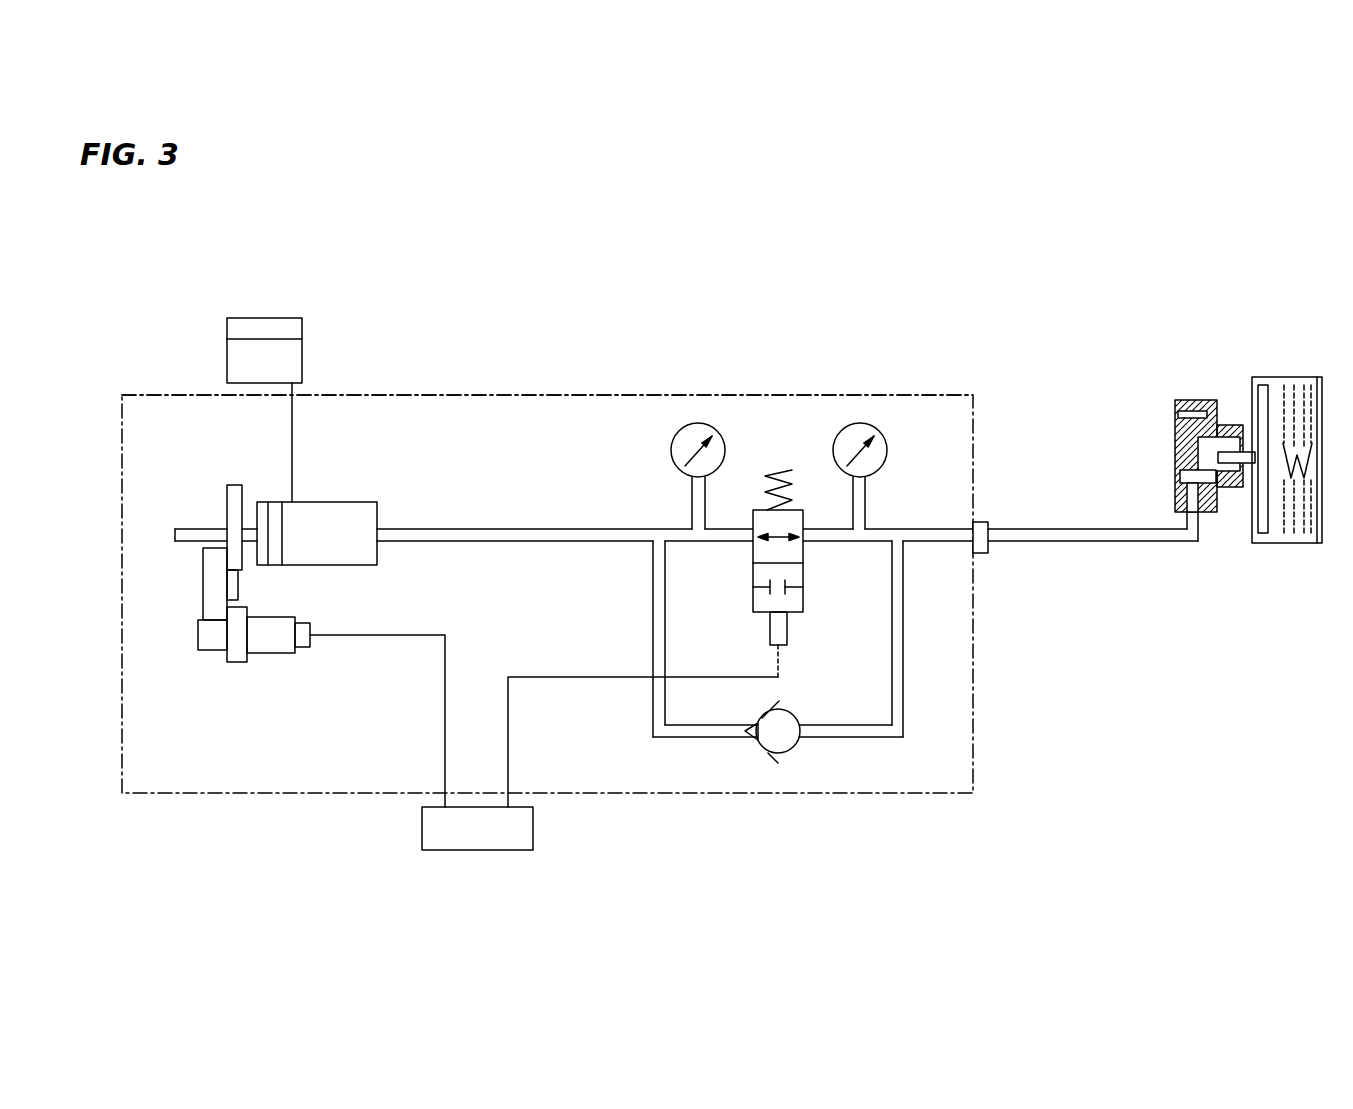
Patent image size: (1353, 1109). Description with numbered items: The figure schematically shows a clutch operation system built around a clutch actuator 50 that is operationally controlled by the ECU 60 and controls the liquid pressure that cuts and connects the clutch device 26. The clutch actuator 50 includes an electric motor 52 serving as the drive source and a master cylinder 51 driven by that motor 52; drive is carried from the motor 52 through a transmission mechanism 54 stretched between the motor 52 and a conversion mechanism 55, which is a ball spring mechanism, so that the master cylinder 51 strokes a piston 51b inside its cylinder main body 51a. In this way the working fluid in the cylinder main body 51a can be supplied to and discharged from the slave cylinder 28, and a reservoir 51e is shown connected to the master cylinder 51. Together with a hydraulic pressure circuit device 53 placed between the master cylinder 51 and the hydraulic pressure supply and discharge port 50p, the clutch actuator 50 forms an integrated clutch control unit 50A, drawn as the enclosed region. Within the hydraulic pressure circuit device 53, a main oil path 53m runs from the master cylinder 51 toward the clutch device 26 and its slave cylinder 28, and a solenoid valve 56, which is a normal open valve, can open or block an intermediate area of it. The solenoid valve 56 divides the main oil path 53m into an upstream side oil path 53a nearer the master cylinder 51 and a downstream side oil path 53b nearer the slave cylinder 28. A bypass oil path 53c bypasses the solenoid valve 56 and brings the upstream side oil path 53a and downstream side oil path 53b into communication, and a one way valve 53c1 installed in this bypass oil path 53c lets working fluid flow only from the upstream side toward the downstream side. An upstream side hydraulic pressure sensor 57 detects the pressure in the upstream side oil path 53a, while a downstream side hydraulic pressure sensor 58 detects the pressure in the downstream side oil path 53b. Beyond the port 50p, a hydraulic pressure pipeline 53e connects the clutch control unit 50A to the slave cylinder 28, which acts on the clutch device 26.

The clutch device 26 is at (1307, 370).
The slave cylinder 28 is at (1192, 395).
The clutch actuator 50 is at (190, 418).
The clutch control unit 50A is at (403, 393).
The hydraulic pressure supply and discharge port 50p is at (988, 555).
The master cylinder 51 is at (301, 429).
The cylinder main body 51a is at (338, 501).
The piston 51b is at (276, 548).
The reservoir 51e is at (271, 318).
The electric motor 52 is at (265, 662).
The hydraulic pressure circuit device 53 is at (675, 603).
The upstream side oil path 53a is at (497, 528).
The downstream side oil path 53b is at (912, 528).
The bypass oil path 53c is at (872, 738).
The one way valve 53c1 is at (791, 758).
The hydraulic pressure pipeline 53e is at (1057, 530).
The main oil path 53m is at (881, 475).
The transmission mechanism 54 is at (204, 587).
The conversion mechanism 55 is at (226, 500).
The solenoid valve 56 is at (805, 615).
The upstream side hydraulic pressure sensor 57 is at (672, 440).
The downstream side hydraulic pressure sensor 58 is at (834, 440).
The ECU 60 is at (472, 850).